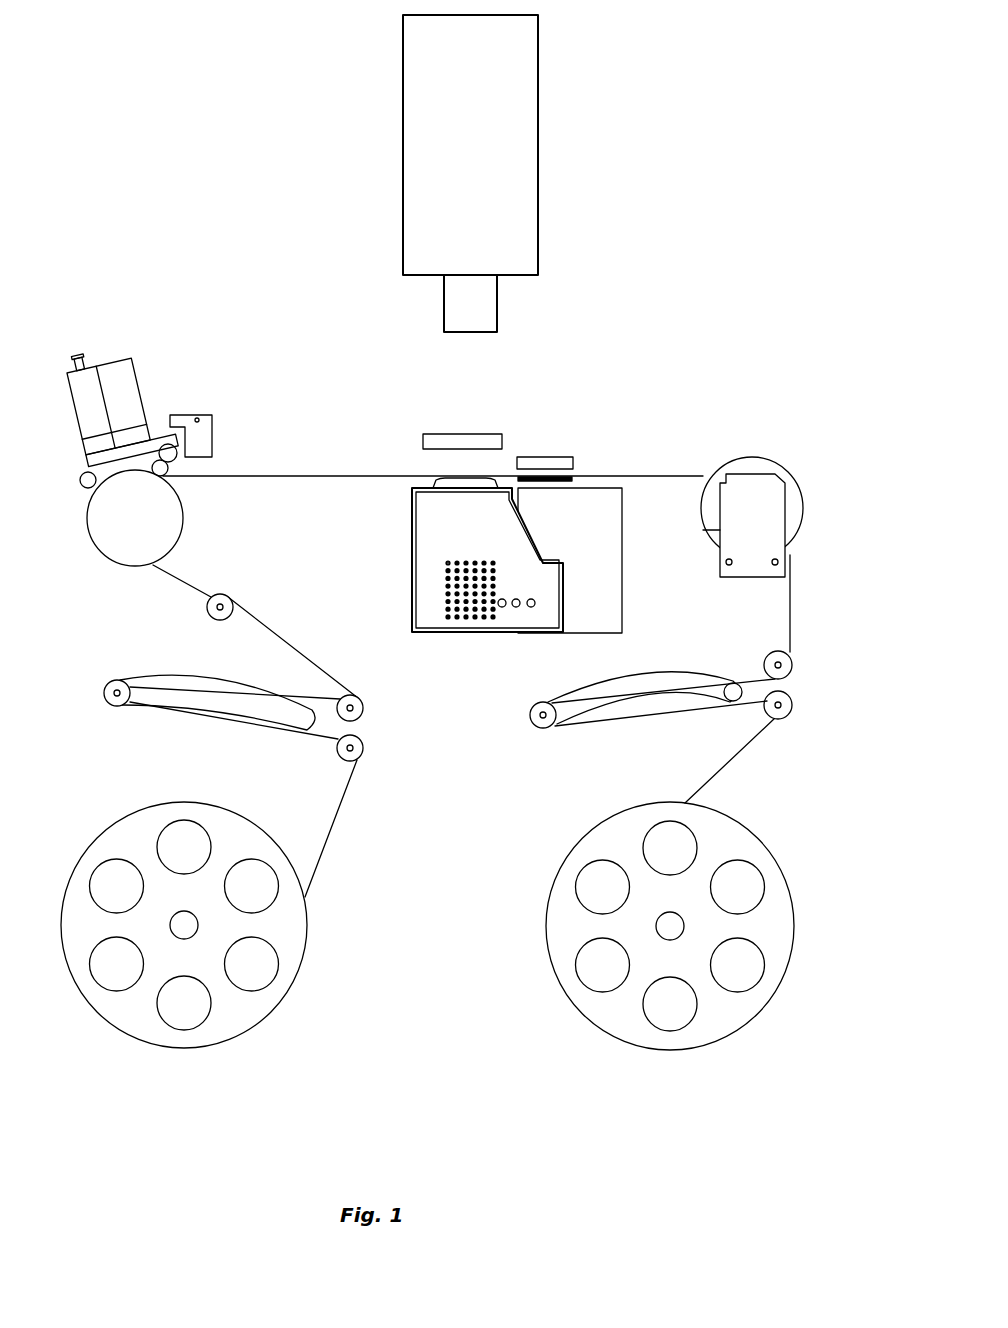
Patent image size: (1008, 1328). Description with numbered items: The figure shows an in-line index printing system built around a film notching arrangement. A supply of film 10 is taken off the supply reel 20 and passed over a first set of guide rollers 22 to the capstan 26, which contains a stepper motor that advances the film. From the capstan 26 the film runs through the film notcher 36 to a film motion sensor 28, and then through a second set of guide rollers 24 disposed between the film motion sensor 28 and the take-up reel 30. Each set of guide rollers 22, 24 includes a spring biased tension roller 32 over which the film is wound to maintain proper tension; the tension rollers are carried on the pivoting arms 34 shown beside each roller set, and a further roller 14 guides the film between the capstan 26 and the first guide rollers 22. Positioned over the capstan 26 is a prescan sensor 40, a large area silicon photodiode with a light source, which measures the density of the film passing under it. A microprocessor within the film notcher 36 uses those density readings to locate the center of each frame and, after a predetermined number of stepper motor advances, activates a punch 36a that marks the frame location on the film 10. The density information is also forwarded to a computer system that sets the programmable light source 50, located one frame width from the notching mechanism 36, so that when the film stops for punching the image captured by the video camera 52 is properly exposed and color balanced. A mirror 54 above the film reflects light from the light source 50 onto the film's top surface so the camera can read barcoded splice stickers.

The film 10 is at (322, 475).
The guide roller 14 is at (233, 602).
The supply reel 20 is at (117, 800).
The first set of guide rollers 22 is at (365, 747).
The second set of guide rollers 24 is at (792, 667).
The capstan 26 is at (183, 522).
The film motion sensor 28 is at (787, 515).
The take-up reel 30 is at (558, 872).
The spring biased tension roller 32 is at (110, 703).
The tension arms 34 is at (170, 677).
The film notcher 36 is at (618, 553).
The punch 36a is at (572, 479).
The prescan sensor 40 is at (143, 397).
The programmable light source 50 is at (412, 572).
The video camera 52 is at (527, 191).
The mirror 54 is at (493, 433).